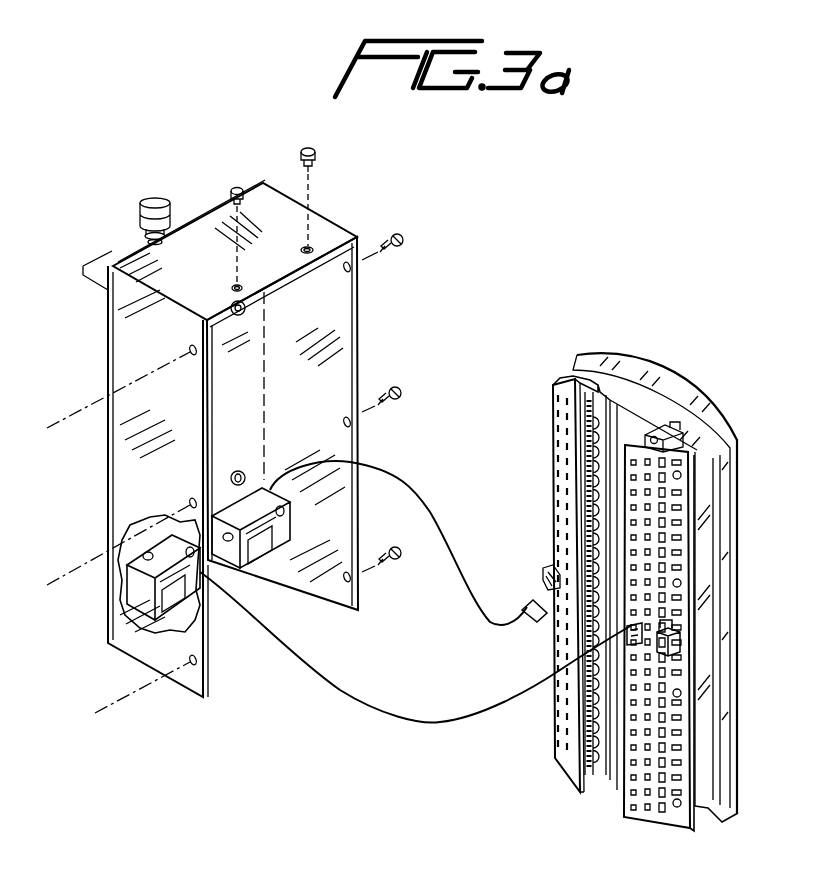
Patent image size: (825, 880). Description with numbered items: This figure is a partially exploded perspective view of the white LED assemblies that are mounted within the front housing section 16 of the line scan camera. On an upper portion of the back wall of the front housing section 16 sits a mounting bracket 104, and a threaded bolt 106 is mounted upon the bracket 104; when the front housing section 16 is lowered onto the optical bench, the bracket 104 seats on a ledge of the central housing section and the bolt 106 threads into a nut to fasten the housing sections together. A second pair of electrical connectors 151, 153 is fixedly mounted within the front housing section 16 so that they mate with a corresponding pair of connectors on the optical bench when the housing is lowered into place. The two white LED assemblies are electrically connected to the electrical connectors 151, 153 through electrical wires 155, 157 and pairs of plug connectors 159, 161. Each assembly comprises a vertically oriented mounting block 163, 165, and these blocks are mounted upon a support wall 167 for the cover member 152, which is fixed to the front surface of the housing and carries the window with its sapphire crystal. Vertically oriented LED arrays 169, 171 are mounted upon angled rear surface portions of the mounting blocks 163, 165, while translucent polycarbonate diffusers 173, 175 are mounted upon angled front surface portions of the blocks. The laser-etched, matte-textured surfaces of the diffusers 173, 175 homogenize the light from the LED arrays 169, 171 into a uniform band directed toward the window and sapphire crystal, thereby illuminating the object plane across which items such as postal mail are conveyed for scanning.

The front housing section 16 is at (266, 205).
The mounting bracket 104 is at (190, 213).
The threaded bolt 106 is at (155, 200).
The electrical connector 151 is at (242, 476).
The cover member 152 is at (643, 373).
The electrical connector 153 is at (165, 570).
The electrical wire 155 is at (431, 510).
The electrical wire 157 is at (288, 627).
The plug connector 159 is at (543, 576).
The plug connector 161 is at (707, 615).
The mounting block 163 is at (573, 388).
The mounting block 165 is at (700, 450).
The support wall 167 is at (725, 545).
The LED array 169 is at (553, 757).
The LED array 171 is at (677, 828).
The diffuser 173 is at (598, 360).
The diffuser 175 is at (665, 430).